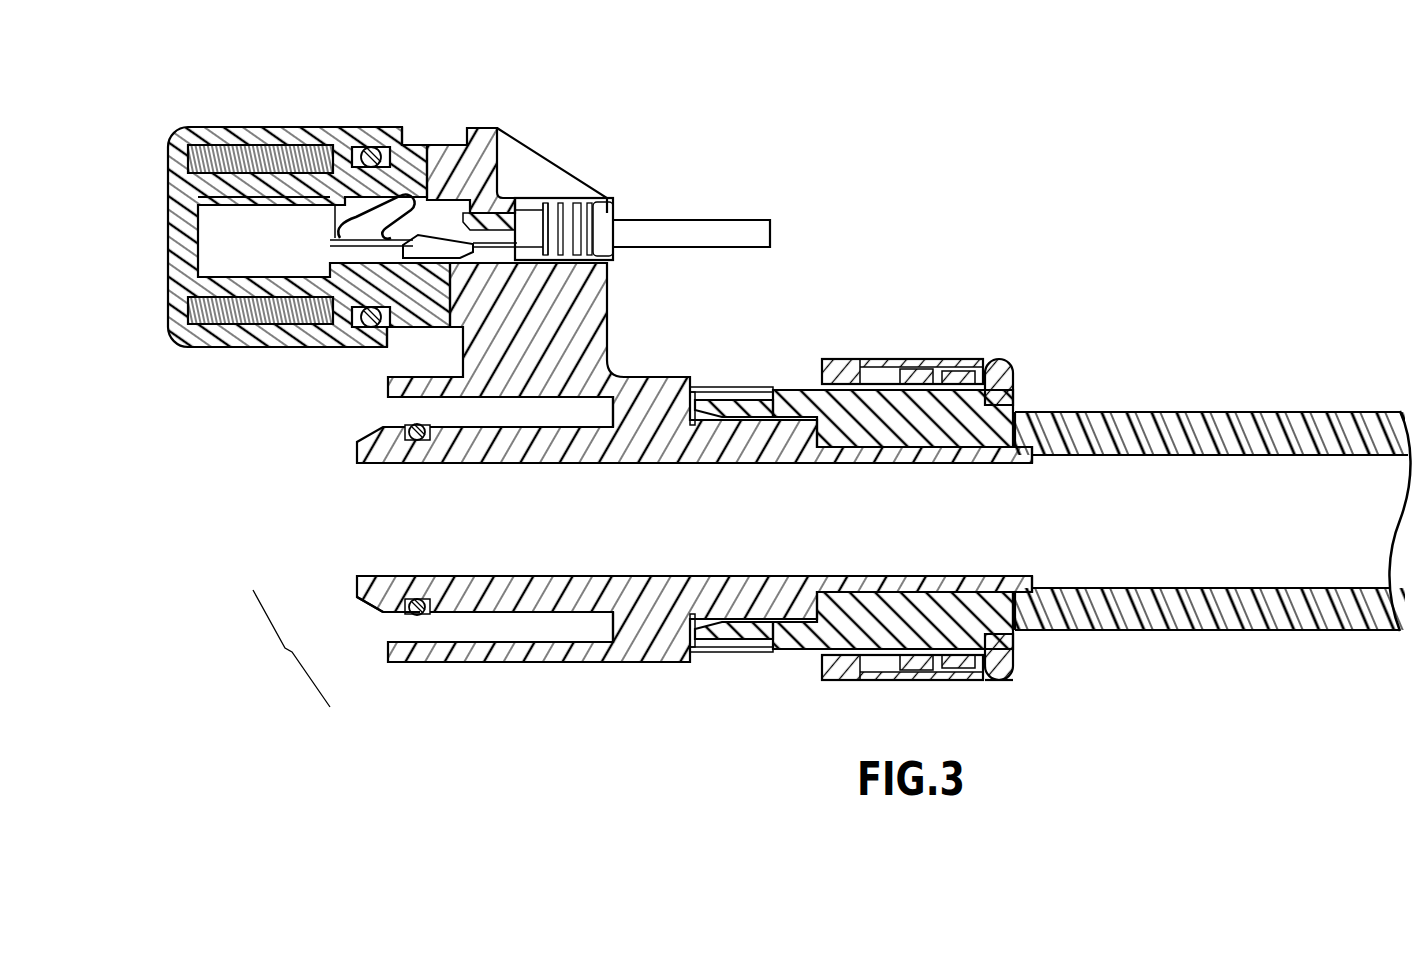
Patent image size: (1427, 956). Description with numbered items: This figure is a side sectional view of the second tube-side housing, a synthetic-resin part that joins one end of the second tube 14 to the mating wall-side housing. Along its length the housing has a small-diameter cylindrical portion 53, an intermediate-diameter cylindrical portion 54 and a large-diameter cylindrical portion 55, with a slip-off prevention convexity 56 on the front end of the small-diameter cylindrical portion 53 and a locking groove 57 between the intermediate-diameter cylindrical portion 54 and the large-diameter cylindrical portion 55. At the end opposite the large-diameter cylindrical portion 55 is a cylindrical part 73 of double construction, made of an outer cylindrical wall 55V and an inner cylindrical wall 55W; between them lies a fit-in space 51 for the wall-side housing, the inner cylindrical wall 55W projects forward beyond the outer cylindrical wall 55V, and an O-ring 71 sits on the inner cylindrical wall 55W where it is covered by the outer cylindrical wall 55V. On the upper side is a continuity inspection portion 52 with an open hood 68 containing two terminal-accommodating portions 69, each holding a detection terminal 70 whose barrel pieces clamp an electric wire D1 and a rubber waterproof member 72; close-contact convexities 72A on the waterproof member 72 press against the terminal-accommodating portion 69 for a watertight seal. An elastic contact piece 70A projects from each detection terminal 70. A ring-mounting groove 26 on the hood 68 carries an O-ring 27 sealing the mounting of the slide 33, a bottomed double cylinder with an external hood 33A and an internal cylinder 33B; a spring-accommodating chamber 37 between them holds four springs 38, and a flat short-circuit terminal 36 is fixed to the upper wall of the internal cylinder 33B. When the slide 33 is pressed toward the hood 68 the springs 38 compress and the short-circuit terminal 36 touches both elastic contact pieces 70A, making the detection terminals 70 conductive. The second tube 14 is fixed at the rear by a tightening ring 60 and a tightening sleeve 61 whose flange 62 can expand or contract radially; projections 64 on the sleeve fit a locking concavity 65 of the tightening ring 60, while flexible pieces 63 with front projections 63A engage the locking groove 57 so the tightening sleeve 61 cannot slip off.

The second tube 14 is at (1160, 412).
The ring-mounting groove 26 is at (384, 128).
The O-ring 27 is at (360, 338).
The slide 33 is at (257, 102).
The external hood 33A is at (402, 200).
The internal cylinder 33B is at (427, 300).
The short-circuit terminal 36 is at (208, 206).
The spring-accommodating chamber 37 is at (232, 146).
The spring 38 is at (188, 158).
The fit-in space 51 is at (403, 405).
The continuity inspection portion 52 is at (460, 116).
The small-diameter cylindrical portion 53 is at (1012, 478).
The intermediate-diameter cylindrical portion 54 is at (785, 415).
The large-diameter cylindrical portion 55 is at (656, 664).
The outer cylindrical wall 55V is at (387, 640).
The inner cylindrical wall 55W is at (358, 591).
The slip-off prevention convexity 56 is at (1015, 598).
The locking groove 57 is at (708, 400).
The tightening ring 60 is at (848, 338).
The tightening sleeve 61 is at (807, 665).
The flange 62 is at (1002, 682).
The flexible piece 63 is at (718, 400).
The front projection 63A is at (738, 467).
The projection 64 is at (934, 371).
The locking concavity 65 is at (906, 370).
The hood 68 is at (362, 148).
The terminal-accommodating portion 69 is at (478, 227).
The detection terminal 70 is at (505, 200).
The elastic contact piece 70A is at (436, 230).
The O-ring 71 is at (428, 618).
The waterproof member 72 is at (630, 203).
The close-contact convexity 72A is at (565, 255).
The cylindrical part 73 is at (288, 648).
The electric wire D1 is at (735, 222).